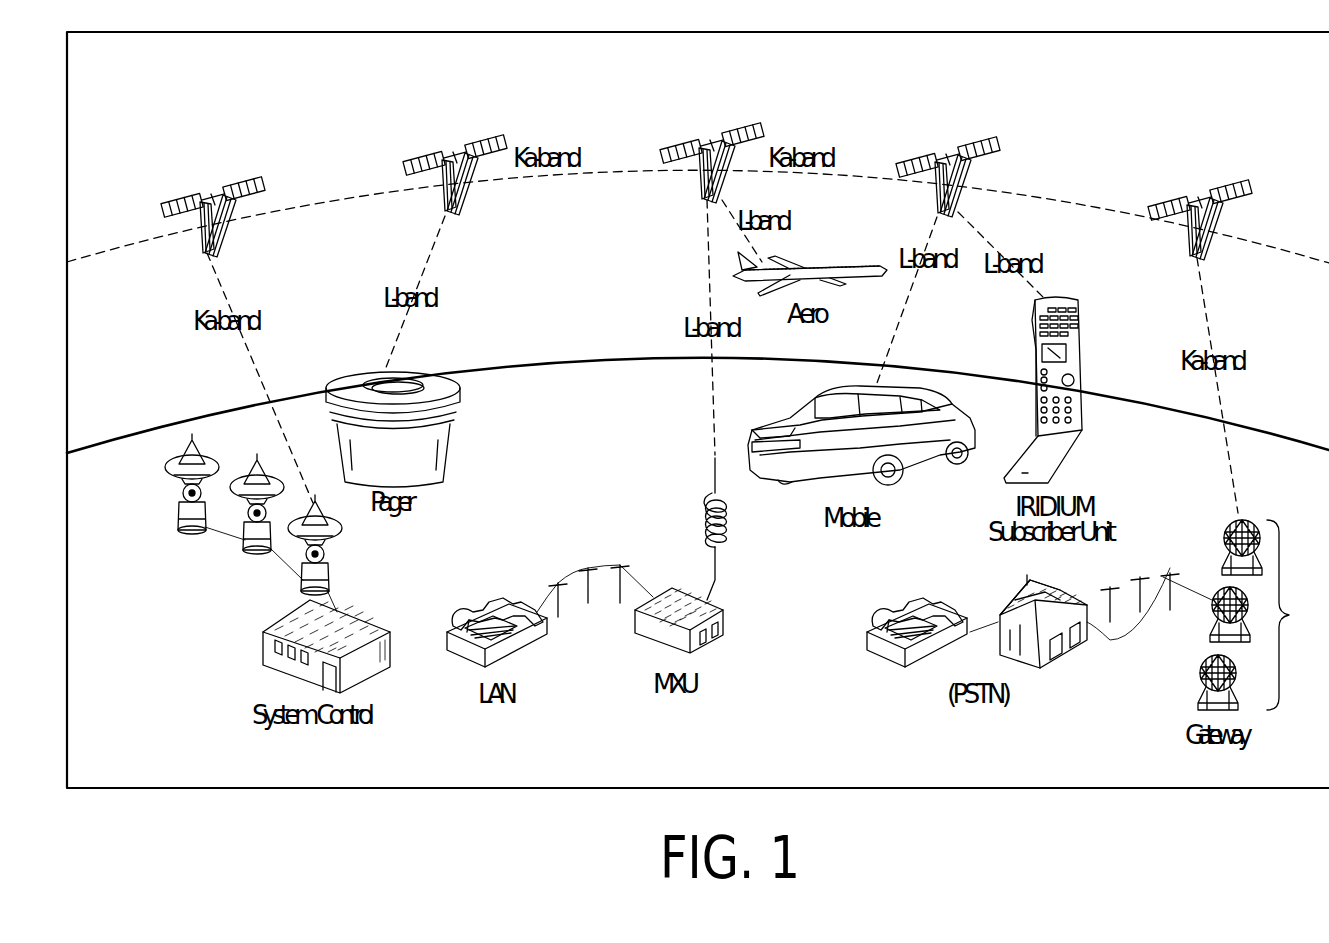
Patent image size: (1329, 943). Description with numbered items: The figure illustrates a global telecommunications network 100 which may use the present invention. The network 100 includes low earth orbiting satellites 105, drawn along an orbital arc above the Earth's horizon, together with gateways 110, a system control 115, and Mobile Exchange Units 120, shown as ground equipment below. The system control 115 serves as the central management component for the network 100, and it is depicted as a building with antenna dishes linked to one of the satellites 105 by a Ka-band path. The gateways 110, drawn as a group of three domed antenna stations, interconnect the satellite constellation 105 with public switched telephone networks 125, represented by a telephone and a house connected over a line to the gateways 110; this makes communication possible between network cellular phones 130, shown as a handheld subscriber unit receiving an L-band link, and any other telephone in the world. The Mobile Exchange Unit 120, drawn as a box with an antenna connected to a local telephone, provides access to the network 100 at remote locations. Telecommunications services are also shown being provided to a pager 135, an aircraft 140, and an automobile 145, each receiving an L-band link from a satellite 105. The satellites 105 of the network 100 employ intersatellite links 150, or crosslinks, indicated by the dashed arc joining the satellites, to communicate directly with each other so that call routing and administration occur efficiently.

The network 100 is at (990, 860).
The low earth orbiting satellites 105 is at (227, 190).
The gateways 110 is at (1262, 615).
The system control 115 is at (277, 622).
The Mobile Exchange Units 120 is at (723, 623).
The public switched telephone networks 125 is at (1087, 648).
The network cellular phones 130 is at (1080, 417).
The pagers 135 is at (347, 373).
The aircraft 140 is at (850, 263).
The automobiles 145 is at (810, 405).
The intersatellite links 150 is at (320, 202).